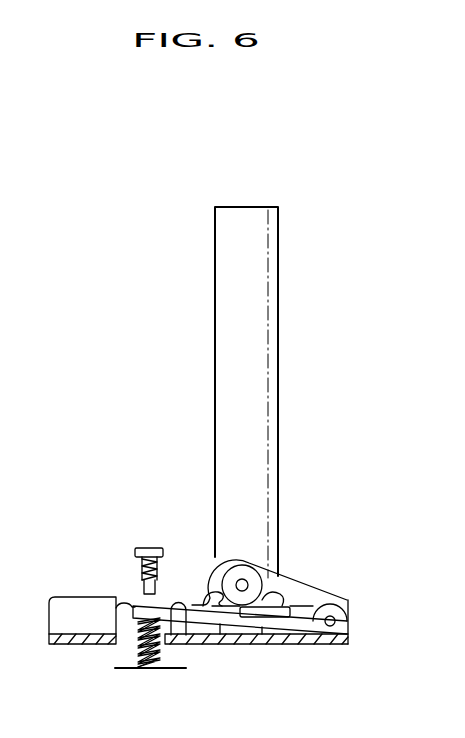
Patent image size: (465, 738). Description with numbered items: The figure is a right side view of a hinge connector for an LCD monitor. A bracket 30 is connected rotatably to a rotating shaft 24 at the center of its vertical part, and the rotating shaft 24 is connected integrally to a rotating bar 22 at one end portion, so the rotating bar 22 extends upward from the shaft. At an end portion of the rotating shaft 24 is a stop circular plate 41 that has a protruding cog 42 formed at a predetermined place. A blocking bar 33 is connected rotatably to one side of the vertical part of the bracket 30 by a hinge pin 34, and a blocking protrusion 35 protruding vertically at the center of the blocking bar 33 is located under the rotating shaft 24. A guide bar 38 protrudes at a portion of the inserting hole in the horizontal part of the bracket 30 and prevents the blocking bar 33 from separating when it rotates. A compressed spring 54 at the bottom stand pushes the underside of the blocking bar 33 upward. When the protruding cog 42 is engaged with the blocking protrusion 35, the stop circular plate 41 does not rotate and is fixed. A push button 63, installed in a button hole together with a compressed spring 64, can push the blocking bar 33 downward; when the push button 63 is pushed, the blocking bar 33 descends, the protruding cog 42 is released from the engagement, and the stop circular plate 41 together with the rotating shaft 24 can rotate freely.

The rotating bar 22 is at (255, 297).
The rotating shaft 24 is at (247, 584).
The bracket 30 is at (78, 618).
The blocking bar 33 is at (320, 628).
The hinge pin 34 is at (350, 613).
The blocking protrusion 35 is at (266, 615).
The guide bar 38 is at (180, 622).
The stop circular plate 41 is at (262, 588).
The protruding cog 42 is at (226, 576).
The compressed spring 54 is at (163, 650).
The push button 63 is at (148, 548).
The compressed spring 64 is at (140, 578).